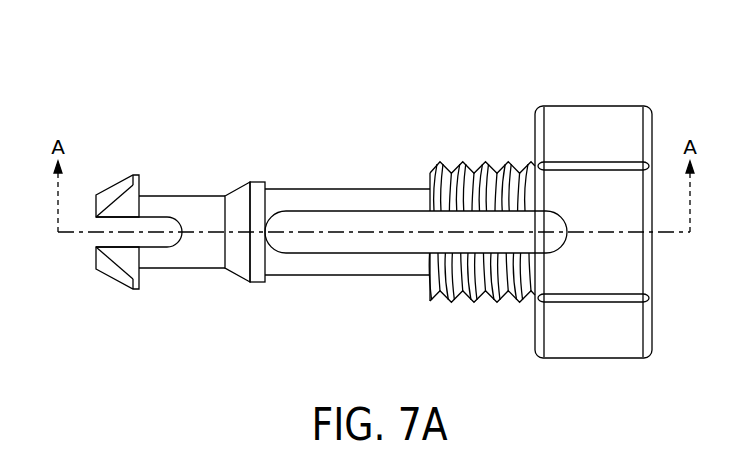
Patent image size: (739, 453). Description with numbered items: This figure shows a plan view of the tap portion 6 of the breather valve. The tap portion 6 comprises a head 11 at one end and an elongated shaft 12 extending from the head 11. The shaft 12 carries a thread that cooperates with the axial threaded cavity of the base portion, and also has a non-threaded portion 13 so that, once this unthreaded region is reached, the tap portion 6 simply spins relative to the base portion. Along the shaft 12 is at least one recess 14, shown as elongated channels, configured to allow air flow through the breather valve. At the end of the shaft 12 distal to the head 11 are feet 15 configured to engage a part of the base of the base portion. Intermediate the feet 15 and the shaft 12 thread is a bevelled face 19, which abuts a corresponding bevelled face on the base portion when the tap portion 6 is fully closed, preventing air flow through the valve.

The tap portion 6 is at (609, 97).
The head 11 is at (572, 118).
The elongated shaft 12 is at (415, 129).
The non-threaded portion 13 is at (272, 182).
The recess 14 is at (378, 243).
The foot 15 is at (116, 183).
The bevelled face 19 is at (240, 181).